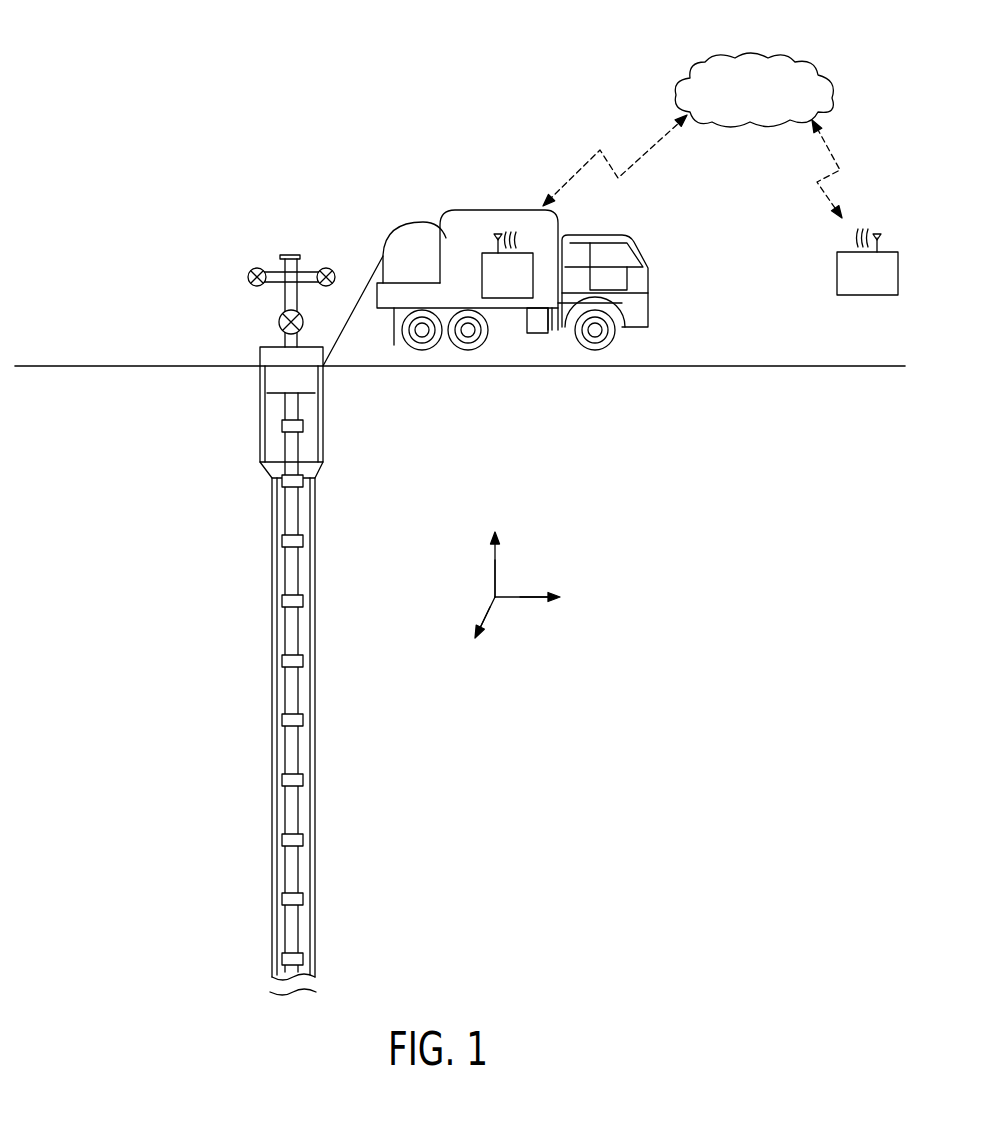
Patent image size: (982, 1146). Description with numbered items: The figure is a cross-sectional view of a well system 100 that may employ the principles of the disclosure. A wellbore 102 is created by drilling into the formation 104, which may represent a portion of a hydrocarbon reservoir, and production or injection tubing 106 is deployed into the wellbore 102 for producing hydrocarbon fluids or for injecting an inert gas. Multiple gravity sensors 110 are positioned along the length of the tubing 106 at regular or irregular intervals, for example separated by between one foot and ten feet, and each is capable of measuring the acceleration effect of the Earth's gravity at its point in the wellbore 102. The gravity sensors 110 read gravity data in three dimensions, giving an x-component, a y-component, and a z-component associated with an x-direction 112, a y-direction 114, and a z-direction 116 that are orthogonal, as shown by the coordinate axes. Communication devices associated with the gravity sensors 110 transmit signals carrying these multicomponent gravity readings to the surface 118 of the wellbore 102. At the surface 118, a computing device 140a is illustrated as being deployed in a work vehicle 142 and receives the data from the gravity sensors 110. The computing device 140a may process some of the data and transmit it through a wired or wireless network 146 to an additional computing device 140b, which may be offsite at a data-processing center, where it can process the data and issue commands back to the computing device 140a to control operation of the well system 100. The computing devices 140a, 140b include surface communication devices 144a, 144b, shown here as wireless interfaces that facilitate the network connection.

The well system 100 is at (232, 175).
The wellbore 102 is at (272, 540).
The formation 104 is at (115, 458).
The tubing 106 is at (292, 578).
The gravity sensors 110 is at (302, 426).
The x-direction 112 is at (490, 611).
The y-direction 114 is at (518, 593).
The z-direction 116 is at (497, 570).
The surface 118 is at (158, 364).
The computing device 140a is at (487, 273).
The additional computing device 140b is at (865, 295).
The work vehicle 142 is at (645, 318).
The surface communication device 144a is at (512, 248).
The surface communication device 144b is at (866, 228).
The network 146 is at (793, 72).